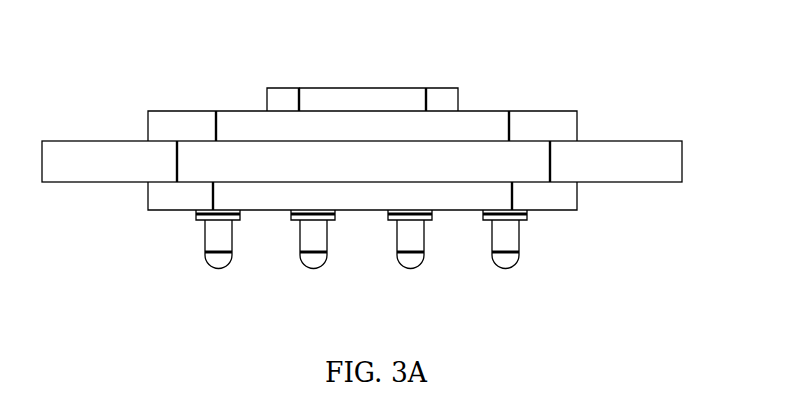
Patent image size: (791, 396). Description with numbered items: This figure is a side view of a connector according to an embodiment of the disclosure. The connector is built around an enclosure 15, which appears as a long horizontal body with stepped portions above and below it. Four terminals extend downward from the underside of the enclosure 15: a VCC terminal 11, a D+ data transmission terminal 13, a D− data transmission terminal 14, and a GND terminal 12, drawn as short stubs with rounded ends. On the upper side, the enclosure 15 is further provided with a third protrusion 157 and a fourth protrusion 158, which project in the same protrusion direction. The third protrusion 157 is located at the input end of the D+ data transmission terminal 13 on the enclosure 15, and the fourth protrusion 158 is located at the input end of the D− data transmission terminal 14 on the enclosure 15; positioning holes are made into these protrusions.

The VCC terminal 11 is at (247, 264).
The GND terminal 12 is at (530, 264).
The D+ data transmission terminal 13 is at (343, 264).
The D− data transmission terminal 14 is at (440, 264).
The enclosure 15 is at (362, 188).
The third protrusion 157 is at (258, 64).
The fourth protrusion 158 is at (378, 64).